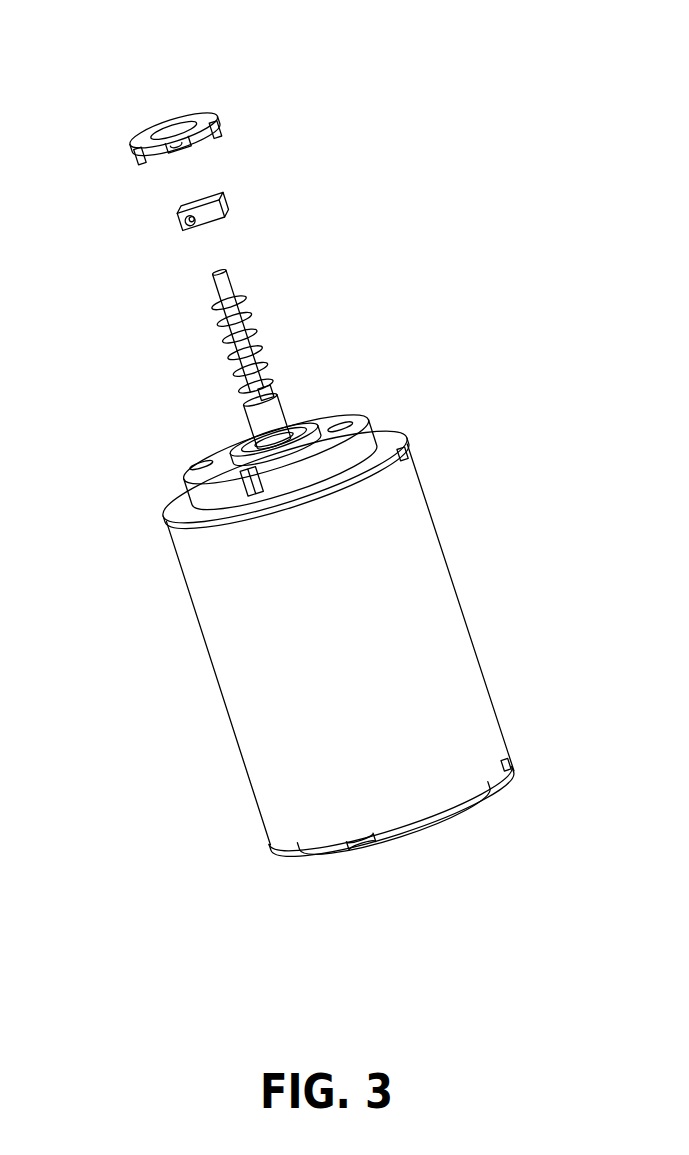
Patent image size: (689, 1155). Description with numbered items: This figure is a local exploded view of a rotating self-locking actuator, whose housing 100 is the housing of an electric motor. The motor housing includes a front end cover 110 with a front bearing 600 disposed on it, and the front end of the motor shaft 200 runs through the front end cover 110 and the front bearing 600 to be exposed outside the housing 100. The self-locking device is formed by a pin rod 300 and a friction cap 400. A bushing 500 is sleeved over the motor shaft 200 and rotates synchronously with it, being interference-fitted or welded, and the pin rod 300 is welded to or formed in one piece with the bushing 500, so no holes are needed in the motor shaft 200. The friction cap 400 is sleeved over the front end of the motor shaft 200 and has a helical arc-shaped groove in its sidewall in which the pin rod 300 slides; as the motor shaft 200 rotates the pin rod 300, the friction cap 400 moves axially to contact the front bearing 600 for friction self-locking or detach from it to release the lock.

The housing 100 is at (477, 565).
The front end cover 110 is at (350, 413).
The motor shaft 200 is at (243, 308).
The pin rod 300 is at (177, 230).
The friction cap 400 is at (200, 117).
The bushing 500 is at (217, 200).
The front bearing 600 is at (245, 455).